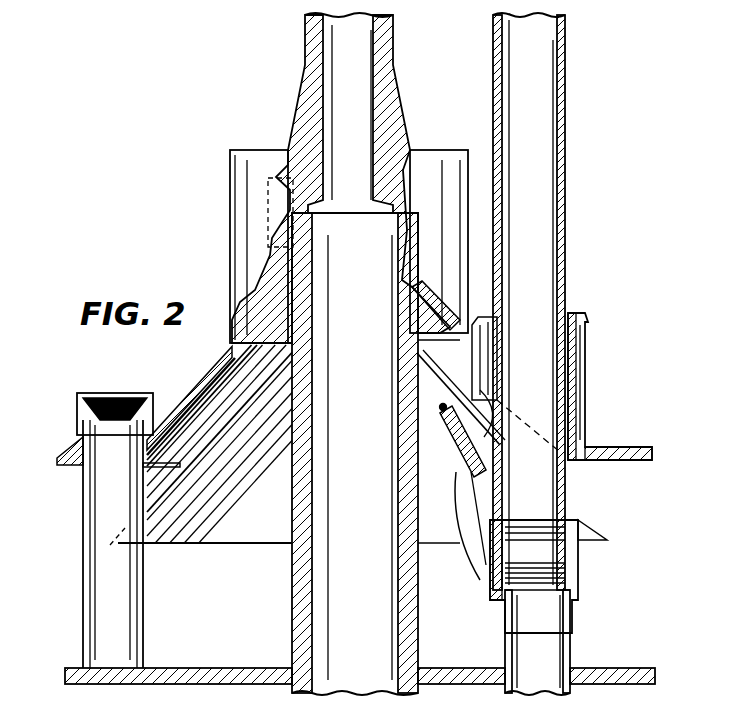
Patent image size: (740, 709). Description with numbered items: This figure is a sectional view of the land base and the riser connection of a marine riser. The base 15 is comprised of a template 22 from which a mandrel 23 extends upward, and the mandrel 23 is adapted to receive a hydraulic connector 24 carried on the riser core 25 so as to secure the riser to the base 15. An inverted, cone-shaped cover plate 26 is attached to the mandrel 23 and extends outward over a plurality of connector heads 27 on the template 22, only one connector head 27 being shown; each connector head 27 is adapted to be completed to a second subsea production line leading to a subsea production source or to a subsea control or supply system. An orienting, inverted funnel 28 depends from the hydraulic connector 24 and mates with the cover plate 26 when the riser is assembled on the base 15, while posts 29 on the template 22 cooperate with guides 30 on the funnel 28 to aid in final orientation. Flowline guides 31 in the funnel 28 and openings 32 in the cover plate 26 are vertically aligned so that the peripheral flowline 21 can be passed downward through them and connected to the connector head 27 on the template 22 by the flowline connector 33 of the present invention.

The base 15 is at (260, 572).
The peripheral flowline 21 is at (493, 97).
The template 22 is at (218, 668).
The mandrel 23 is at (292, 487).
The hydraulic connector 24 is at (242, 160).
The riser core 25 is at (296, 95).
The cover plate 26 is at (218, 432).
The connector head 27 is at (575, 650).
The orienting, inverted funnel 28 is at (225, 370).
The posts 29 is at (95, 583).
The guides 30 is at (153, 400).
The flowline guides 31 is at (573, 398).
The openings 32 is at (480, 390).
The flowline connector 33 is at (592, 612).